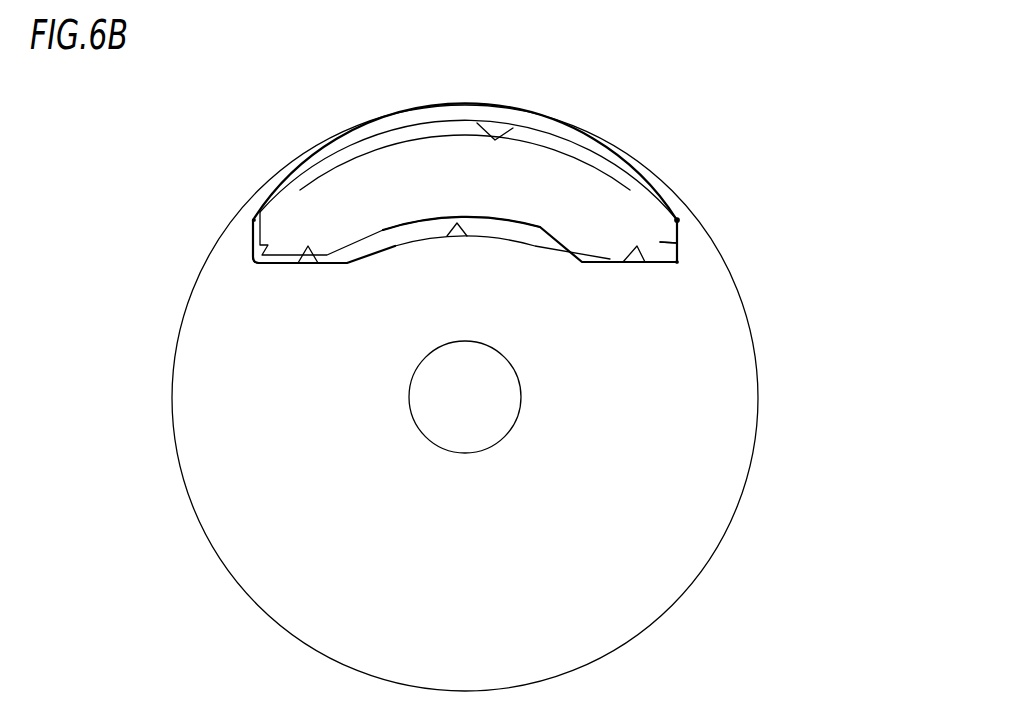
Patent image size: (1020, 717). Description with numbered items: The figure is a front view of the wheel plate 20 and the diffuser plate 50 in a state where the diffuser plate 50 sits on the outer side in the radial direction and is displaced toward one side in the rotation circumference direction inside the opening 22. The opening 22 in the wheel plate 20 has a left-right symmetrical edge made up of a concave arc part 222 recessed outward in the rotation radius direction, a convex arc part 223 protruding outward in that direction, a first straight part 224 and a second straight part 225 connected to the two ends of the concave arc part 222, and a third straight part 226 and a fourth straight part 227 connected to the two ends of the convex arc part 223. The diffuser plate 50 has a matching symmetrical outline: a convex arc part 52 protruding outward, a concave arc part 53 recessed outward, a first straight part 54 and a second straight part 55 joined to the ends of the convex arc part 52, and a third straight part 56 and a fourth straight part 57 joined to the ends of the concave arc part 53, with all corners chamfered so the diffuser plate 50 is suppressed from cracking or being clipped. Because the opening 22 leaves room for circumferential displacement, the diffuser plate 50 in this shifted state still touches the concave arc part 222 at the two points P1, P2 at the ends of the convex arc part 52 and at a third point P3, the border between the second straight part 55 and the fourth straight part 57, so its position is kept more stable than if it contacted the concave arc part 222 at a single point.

The wheel plate 20 is at (758, 410).
The opening 22 is at (647, 128).
The diffuser plate 50 is at (340, 165).
The convex arc part 52 is at (400, 128).
The concave arc part 53 is at (383, 228).
The first straight part 54 is at (253, 228).
The second straight part 55 is at (678, 233).
The third straight part 56 is at (279, 256).
The fourth straight part 57 is at (645, 262).
The concave arc part 222 is at (513, 128).
The convex arc part 223 is at (457, 223).
The first straight part 224 is at (262, 257).
The second straight part 225 is at (660, 242).
The third straight part 226 is at (318, 263).
The fourth straight part 227 is at (623, 262).
The contact point P1 is at (257, 215).
The contact point P2 is at (679, 221).
The contact point P3 is at (680, 262).